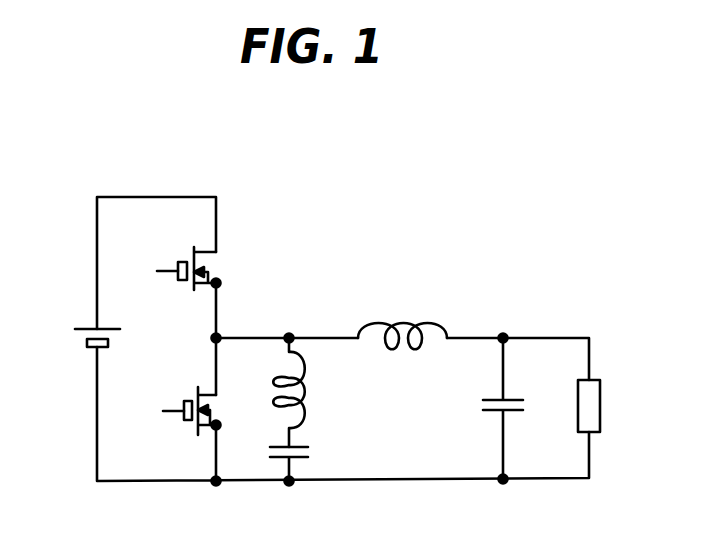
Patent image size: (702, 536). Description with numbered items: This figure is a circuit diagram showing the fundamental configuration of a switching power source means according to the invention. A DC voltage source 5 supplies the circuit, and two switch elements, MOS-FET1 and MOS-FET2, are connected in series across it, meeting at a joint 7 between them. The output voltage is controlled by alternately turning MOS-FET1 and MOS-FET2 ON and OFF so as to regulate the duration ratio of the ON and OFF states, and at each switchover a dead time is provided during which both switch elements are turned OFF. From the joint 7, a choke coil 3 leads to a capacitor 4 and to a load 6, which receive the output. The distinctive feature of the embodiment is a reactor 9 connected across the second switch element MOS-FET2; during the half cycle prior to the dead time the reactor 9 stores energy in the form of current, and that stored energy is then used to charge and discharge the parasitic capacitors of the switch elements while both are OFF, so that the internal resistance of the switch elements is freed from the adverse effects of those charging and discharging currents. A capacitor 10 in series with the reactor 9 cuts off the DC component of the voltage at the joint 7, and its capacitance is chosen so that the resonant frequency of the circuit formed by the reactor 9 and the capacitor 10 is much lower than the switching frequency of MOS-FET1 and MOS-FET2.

The DC voltage source 5 is at (86, 328).
The MOS- FET1 is at (193, 251).
The MOS- FET2 is at (196, 396).
The joint 7 is at (222, 335).
The choke coil 3 is at (406, 322).
The reactor 9 is at (306, 390).
The capacitor 10 is at (310, 452).
The capacitor 4 is at (486, 400).
The load 6 is at (600, 386).